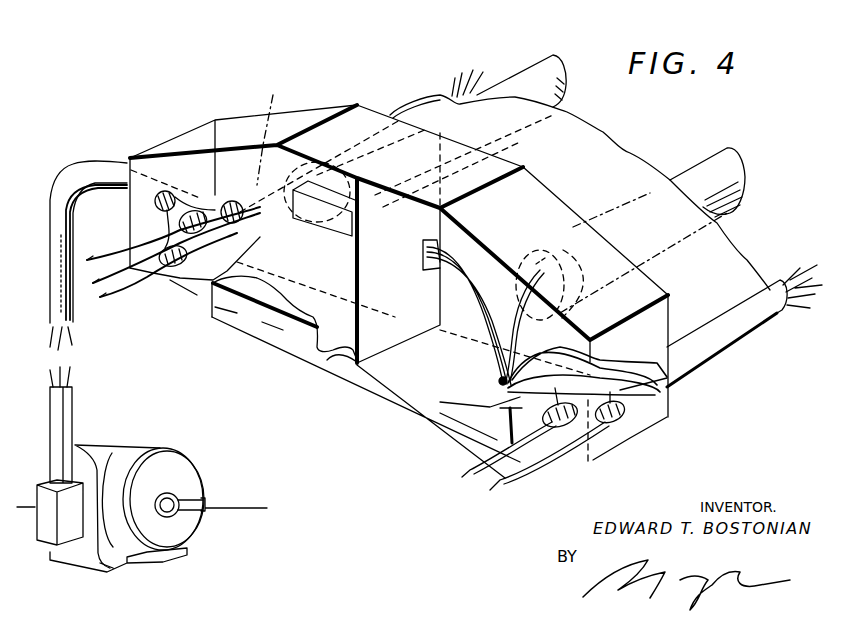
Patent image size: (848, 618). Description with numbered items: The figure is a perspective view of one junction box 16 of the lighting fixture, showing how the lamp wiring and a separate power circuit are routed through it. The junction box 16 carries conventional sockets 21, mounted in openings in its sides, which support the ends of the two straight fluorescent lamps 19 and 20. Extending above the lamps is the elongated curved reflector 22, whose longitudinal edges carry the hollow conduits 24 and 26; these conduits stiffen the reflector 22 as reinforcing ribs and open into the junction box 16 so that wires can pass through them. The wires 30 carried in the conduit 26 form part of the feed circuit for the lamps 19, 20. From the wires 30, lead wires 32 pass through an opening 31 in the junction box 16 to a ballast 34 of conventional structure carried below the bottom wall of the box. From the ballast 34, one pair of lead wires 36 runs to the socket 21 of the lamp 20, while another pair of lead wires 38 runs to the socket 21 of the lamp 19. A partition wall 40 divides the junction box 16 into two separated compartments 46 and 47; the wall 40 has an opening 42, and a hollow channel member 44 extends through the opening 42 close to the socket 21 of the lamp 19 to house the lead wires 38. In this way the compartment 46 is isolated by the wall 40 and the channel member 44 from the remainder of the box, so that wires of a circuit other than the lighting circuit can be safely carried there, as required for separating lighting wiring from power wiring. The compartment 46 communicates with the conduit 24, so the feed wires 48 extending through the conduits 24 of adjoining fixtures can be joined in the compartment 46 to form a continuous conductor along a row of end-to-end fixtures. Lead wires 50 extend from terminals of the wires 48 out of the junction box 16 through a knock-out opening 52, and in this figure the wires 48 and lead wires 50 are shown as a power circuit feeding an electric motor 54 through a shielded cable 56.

The junction box 16 is at (188, 128).
The fluorescent lamp 19 is at (532, 55).
The fluorescent lamp 20 is at (733, 215).
The socket 21 is at (323, 162).
The reflector 22 is at (603, 132).
The conduit 24 is at (272, 135).
The conduit 26 is at (740, 340).
The wires 30 is at (660, 402).
The opening 31 is at (497, 382).
The lead wires 32 is at (533, 377).
The ballast 34 is at (407, 405).
The lead wires 36 is at (516, 315).
The lead wires 38 is at (457, 245).
The partition wall 40 is at (357, 348).
The opening 42 is at (433, 267).
The channel member 44 is at (335, 233).
The compartment 46 is at (288, 240).
The compartment 47 is at (497, 285).
The feed wires 48 is at (222, 200).
The lead wires 50 is at (175, 190).
The knock-out opening 52 is at (157, 202).
The electric motor 54 is at (123, 443).
The shielded cable 56 is at (75, 167).